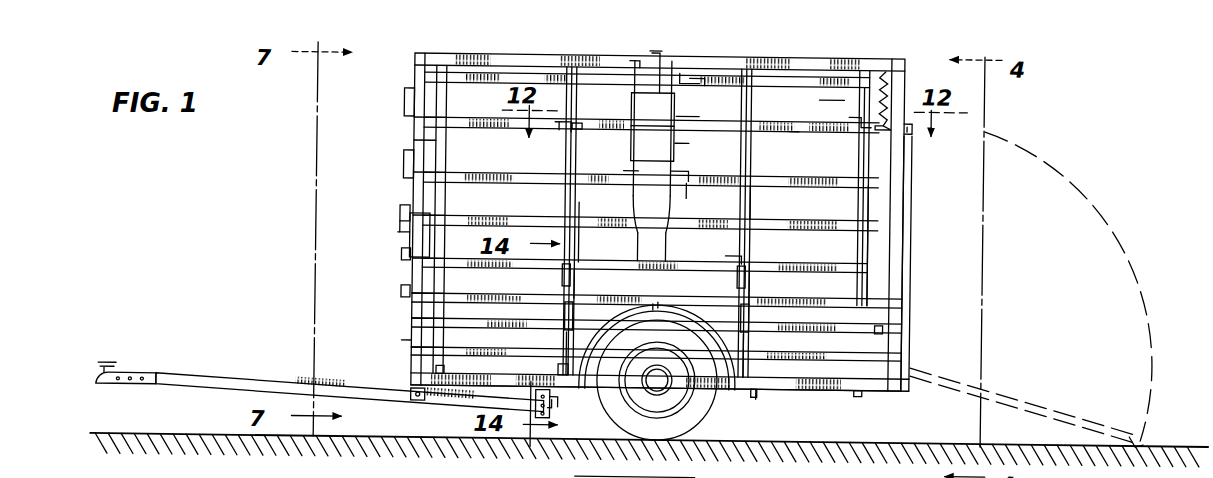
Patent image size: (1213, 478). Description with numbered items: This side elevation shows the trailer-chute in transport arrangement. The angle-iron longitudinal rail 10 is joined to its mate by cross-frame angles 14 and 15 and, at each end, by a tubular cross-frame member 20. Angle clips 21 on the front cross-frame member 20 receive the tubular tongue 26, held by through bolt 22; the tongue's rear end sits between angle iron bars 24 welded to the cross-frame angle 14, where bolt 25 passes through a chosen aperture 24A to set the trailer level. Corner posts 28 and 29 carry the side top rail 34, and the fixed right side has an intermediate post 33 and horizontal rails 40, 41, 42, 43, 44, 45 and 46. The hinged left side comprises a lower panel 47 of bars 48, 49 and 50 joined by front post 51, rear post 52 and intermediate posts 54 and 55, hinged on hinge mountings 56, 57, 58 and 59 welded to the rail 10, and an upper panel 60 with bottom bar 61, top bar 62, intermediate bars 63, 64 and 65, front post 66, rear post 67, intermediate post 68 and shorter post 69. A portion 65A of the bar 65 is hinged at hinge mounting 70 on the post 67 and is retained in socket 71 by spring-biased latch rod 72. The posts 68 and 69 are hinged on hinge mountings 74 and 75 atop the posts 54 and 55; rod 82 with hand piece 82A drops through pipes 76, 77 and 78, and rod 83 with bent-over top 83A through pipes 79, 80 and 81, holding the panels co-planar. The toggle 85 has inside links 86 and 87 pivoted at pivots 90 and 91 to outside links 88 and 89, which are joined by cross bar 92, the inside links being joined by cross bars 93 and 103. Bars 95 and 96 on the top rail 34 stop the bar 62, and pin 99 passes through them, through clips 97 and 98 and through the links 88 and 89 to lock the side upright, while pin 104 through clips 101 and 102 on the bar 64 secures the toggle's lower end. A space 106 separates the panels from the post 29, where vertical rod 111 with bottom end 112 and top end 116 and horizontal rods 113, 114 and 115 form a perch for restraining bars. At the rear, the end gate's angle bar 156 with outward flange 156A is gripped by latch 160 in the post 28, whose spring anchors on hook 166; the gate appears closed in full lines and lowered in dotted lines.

The longitudinal rail 10 is at (806, 386).
The cross-frame angle 14 is at (558, 398).
The cross-frame angle 15 is at (760, 397).
The cross-frame member 20 is at (410, 382).
The angle clips 21 is at (412, 402).
The through bolt 22 is at (421, 403).
The angle iron bars 24 is at (548, 435).
The apertures 24A is at (540, 392).
The bolt 25 is at (560, 410).
The tongue 26 is at (225, 380).
The vertical post 28 is at (905, 238).
The vertical post 29 is at (405, 237).
The intermediate upright post 33 is at (753, 103).
The side top rail 34 is at (797, 62).
The horizontal intermediate rail 40 is at (438, 346).
The horizontal intermediate rail 41 is at (438, 321).
The horizontal intermediate rail 42 is at (438, 293).
The horizontal intermediate rail 43 is at (438, 256).
The horizontal intermediate rail 44 is at (438, 218).
The horizontal intermediate rail 45 is at (440, 185).
The horizontal intermediate rail 46 is at (440, 120).
The lower panel 47 is at (848, 356).
The bar 48 is at (795, 352).
The bar 49 is at (799, 324).
The bar 50 is at (804, 297).
The front post 51 is at (410, 341).
The rear post 52 is at (890, 327).
The intermediate post 54 is at (570, 336).
The intermediate post 55 is at (750, 345).
The hinge mounting 56 is at (449, 370).
The hinge mounting 57 is at (562, 369).
The hinge mounting 58 is at (729, 395).
The hinge mounting 59 is at (862, 385).
The upper panel section 60 is at (880, 205).
The bottom horizontal bar 61 is at (797, 261).
The top horizontal bar 62 is at (848, 90).
The intermediate horizontal bar 63 is at (788, 218).
The intermediate horizontal bar 64 is at (775, 174).
The intermediate horizontal bar 65 is at (510, 126).
The hinged bar portion 65A is at (795, 128).
The front vertical post 66 is at (438, 147).
The rear vertical post 67 is at (862, 158).
The intermediate vertical post 68 is at (567, 162).
The intermediate vertical post 69 is at (752, 200).
The hinge mounting 70 is at (850, 114).
The socket 71 is at (575, 124).
The spring biased latch rod 72 is at (580, 128).
The hinge mounting 74 is at (580, 288).
The hinge mounting 75 is at (758, 284).
The piece of pipe 76 is at (590, 382).
The piece of pipe 77 is at (576, 314).
The piece of pipe 78 is at (565, 270).
The piece of pipe 79 is at (760, 380).
The piece of pipe 80 is at (750, 316).
The piece of pipe 81 is at (738, 272).
The rod 82 is at (607, 346).
The bent-over hand piece 82A is at (578, 250).
The rod 83 is at (710, 340).
The bent-over top 83A is at (735, 254).
The toggle 85 is at (685, 143).
The link 86 is at (674, 170).
The link 87 is at (630, 166).
The link 88 is at (676, 100).
The link 89 is at (636, 100).
The pivot 90 is at (690, 115).
The pivot 91 is at (640, 122).
The cross bar 92 is at (639, 214).
The cross bar 93 is at (653, 127).
The bar 95 is at (690, 75).
The bar 96 is at (640, 58).
The clip 97 is at (700, 88).
The clip 98 is at (630, 90).
The pin 99 is at (736, 74).
The clip 101 is at (680, 188).
The clip 102 is at (632, 247).
The cross bar 103 is at (666, 247).
The pin 104 is at (690, 186).
The space 106 is at (402, 210).
The vertical rod 111 is at (438, 238).
The bottom end 112 is at (405, 292).
The horizontal connecting rod 113 is at (405, 258).
The horizontal connecting rod 114 is at (402, 220).
The horizontal connecting rod 115 is at (410, 174).
The top end 116 is at (410, 151).
The angle bar 156 is at (1148, 420).
The flange 156A is at (1150, 436).
The latch 160 is at (915, 125).
The hook 166 is at (886, 70).